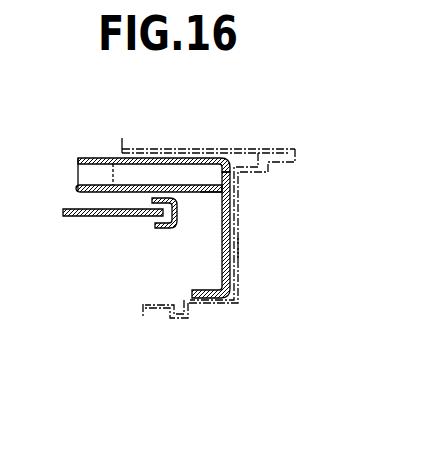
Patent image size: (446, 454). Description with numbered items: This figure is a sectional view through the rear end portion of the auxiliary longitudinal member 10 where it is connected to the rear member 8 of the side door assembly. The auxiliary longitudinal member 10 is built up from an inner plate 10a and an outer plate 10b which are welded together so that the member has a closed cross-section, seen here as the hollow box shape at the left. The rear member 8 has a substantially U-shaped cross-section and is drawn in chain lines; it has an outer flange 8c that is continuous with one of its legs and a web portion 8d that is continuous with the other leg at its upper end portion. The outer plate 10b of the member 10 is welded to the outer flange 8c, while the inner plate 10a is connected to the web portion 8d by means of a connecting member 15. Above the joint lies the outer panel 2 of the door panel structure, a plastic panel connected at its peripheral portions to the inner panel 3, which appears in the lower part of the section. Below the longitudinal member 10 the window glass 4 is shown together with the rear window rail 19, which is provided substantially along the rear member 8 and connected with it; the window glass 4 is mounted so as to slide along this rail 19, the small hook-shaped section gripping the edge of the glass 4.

The outer panel 2 is at (249, 149).
The inner panel 3 is at (163, 318).
The window glass 4 is at (87, 218).
The rear member 8 is at (237, 163).
The outer flange 8c is at (184, 157).
The web portion 8d is at (232, 240).
The auxiliary longitudinal member 10 is at (78, 170).
The inner plate 10a is at (80, 189).
The outer plate 10b is at (88, 157).
The connecting member 15 is at (201, 193).
The rear window rail 19 is at (158, 231).